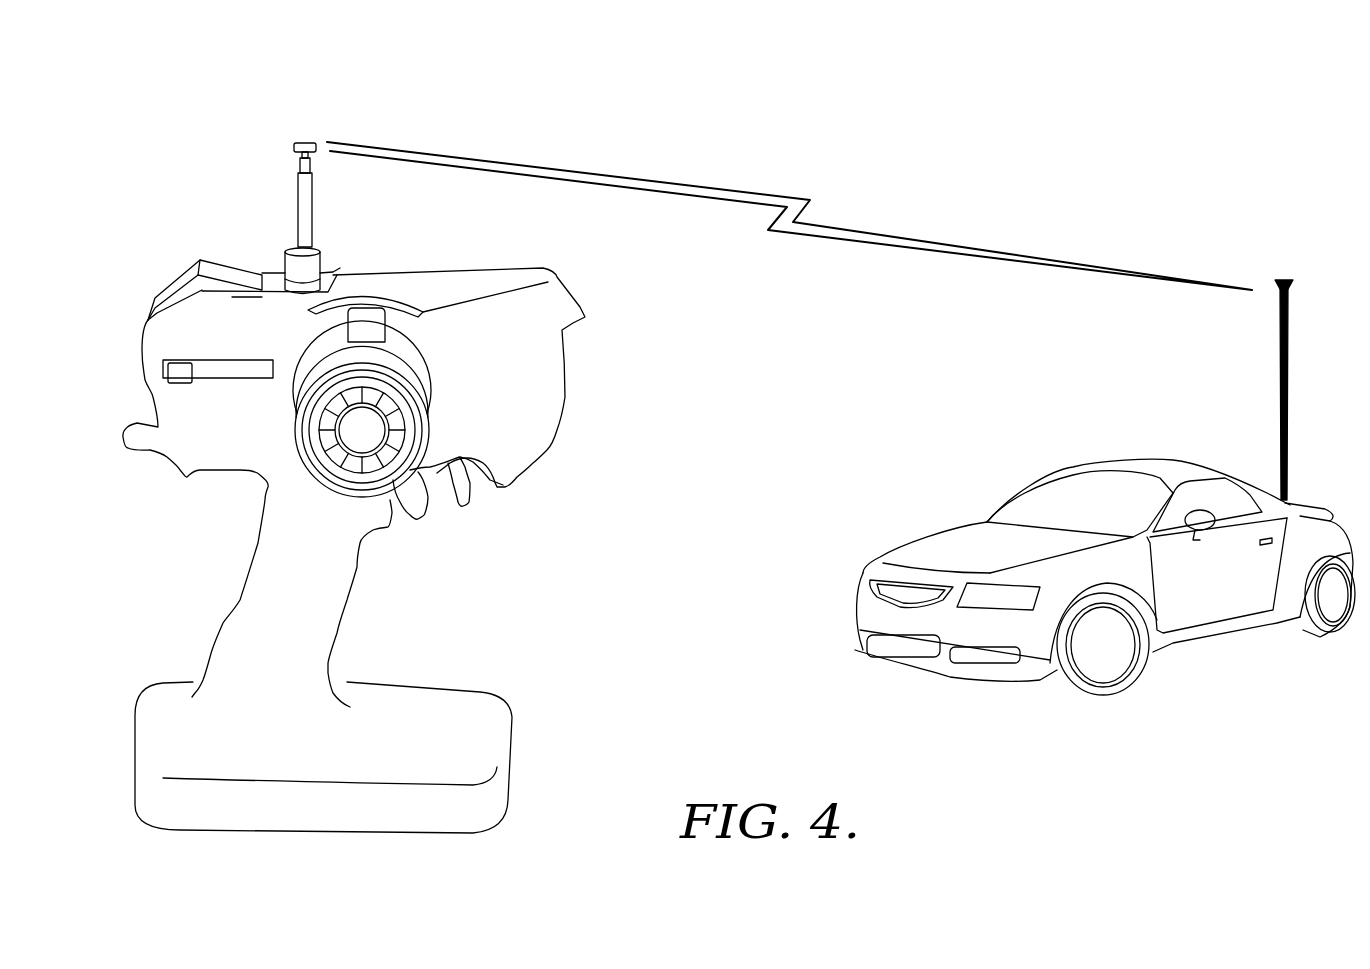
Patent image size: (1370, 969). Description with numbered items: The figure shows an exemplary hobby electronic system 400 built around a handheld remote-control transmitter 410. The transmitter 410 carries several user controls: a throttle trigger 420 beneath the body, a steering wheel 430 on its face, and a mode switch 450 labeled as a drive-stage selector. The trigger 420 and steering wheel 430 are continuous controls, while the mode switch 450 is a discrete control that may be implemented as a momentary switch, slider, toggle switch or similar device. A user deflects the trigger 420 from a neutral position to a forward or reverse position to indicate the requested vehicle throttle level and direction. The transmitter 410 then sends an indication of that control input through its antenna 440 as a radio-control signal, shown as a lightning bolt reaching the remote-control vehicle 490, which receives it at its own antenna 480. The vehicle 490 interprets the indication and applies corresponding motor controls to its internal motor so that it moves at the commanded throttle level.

The hobby electronic system 400 is at (862, 118).
The remote-control transmitter 410 is at (133, 785).
The throttle trigger 420 is at (423, 508).
The steering wheel 430 is at (433, 426).
The antenna 440 is at (292, 213).
The mode switch 450 is at (153, 393).
The antenna 480 is at (1288, 377).
The remote-control vehicle 490 is at (1100, 462).